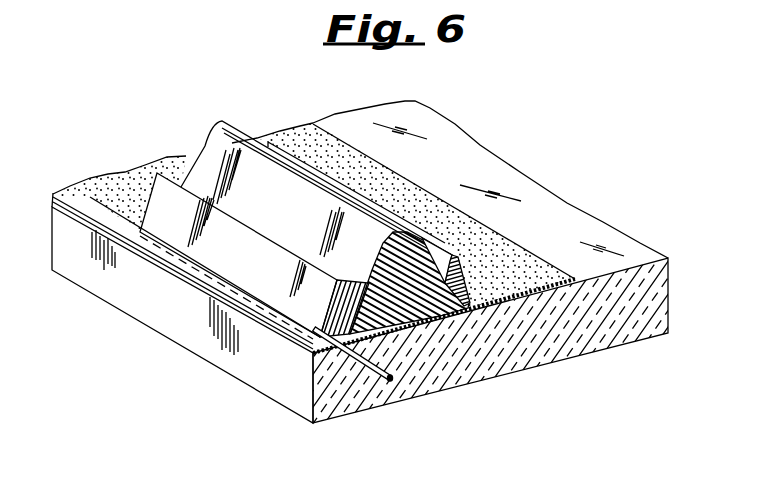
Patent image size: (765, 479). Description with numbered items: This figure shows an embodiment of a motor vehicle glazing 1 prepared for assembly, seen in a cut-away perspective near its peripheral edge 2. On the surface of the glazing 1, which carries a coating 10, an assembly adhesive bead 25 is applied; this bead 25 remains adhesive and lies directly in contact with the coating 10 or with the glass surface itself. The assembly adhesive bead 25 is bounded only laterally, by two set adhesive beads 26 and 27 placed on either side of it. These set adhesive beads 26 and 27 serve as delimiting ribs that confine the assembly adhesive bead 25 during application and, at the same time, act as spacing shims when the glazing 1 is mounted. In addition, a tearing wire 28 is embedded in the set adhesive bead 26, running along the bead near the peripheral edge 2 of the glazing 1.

The glazing 1 is at (572, 344).
The peripheral edge 2 is at (172, 314).
The coating 10 is at (409, 194).
The adhesive bead 25 is at (208, 144).
The set adhesive bead 26 is at (158, 199).
The set adhesive bead 27 is at (457, 274).
The tearing wire 28 is at (386, 382).